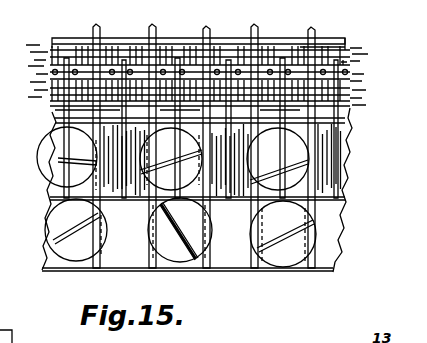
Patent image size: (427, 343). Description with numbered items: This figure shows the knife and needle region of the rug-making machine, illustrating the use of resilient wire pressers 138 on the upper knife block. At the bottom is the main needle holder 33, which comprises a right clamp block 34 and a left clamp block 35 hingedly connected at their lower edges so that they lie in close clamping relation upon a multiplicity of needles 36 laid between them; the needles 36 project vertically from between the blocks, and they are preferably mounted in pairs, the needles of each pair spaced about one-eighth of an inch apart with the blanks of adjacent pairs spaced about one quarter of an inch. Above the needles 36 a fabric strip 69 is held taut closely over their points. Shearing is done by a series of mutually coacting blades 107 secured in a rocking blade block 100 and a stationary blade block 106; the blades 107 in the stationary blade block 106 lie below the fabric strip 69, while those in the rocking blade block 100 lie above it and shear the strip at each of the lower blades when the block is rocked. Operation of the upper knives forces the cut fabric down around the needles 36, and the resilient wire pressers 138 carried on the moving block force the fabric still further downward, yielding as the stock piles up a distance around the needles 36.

The main needle holder 33 is at (347, 43).
The right clamp block 34 is at (347, 108).
The left clamp block 35 is at (325, 43).
The needles 36 is at (163, 70).
The fabric strip 69 is at (353, 61).
The rocking blade block 100 is at (240, 256).
The stationary blade block 106 is at (348, 175).
The blades 107 is at (218, 34).
The resilient wire pressers 138 is at (181, 69).